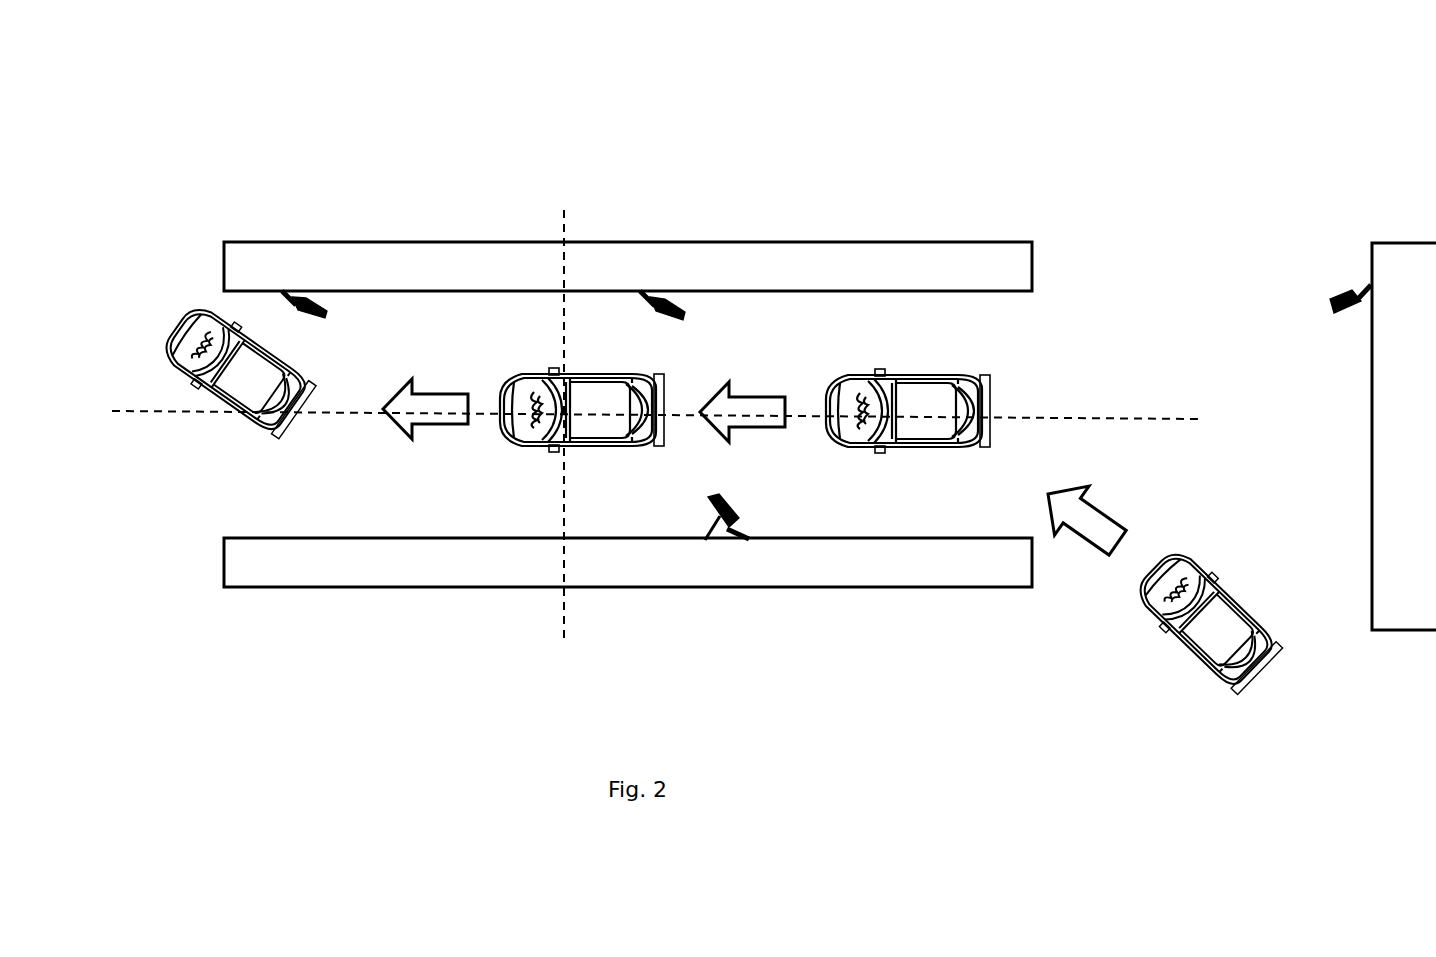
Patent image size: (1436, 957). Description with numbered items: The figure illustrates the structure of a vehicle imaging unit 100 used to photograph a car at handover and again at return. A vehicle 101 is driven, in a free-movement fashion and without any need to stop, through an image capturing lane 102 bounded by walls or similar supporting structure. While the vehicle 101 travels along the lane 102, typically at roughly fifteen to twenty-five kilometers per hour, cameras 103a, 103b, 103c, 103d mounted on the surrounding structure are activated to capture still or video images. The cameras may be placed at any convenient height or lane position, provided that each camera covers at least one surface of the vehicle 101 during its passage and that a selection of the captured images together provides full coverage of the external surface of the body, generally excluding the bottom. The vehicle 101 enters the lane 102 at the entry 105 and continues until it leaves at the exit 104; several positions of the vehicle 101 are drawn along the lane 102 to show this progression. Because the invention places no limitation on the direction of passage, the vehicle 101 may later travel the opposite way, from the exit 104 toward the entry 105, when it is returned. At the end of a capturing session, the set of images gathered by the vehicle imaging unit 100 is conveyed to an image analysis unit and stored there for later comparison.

The vehicle imaging unit 100 is at (1112, 226).
The vehicle 101 is at (165, 305).
The image capturing lane 102 is at (843, 330).
The camera 103a is at (1326, 306).
The camera 103b is at (302, 300).
The camera 103c is at (662, 300).
The camera 103d is at (718, 512).
The exit 104 is at (210, 296).
The entry 105 is at (1013, 335).